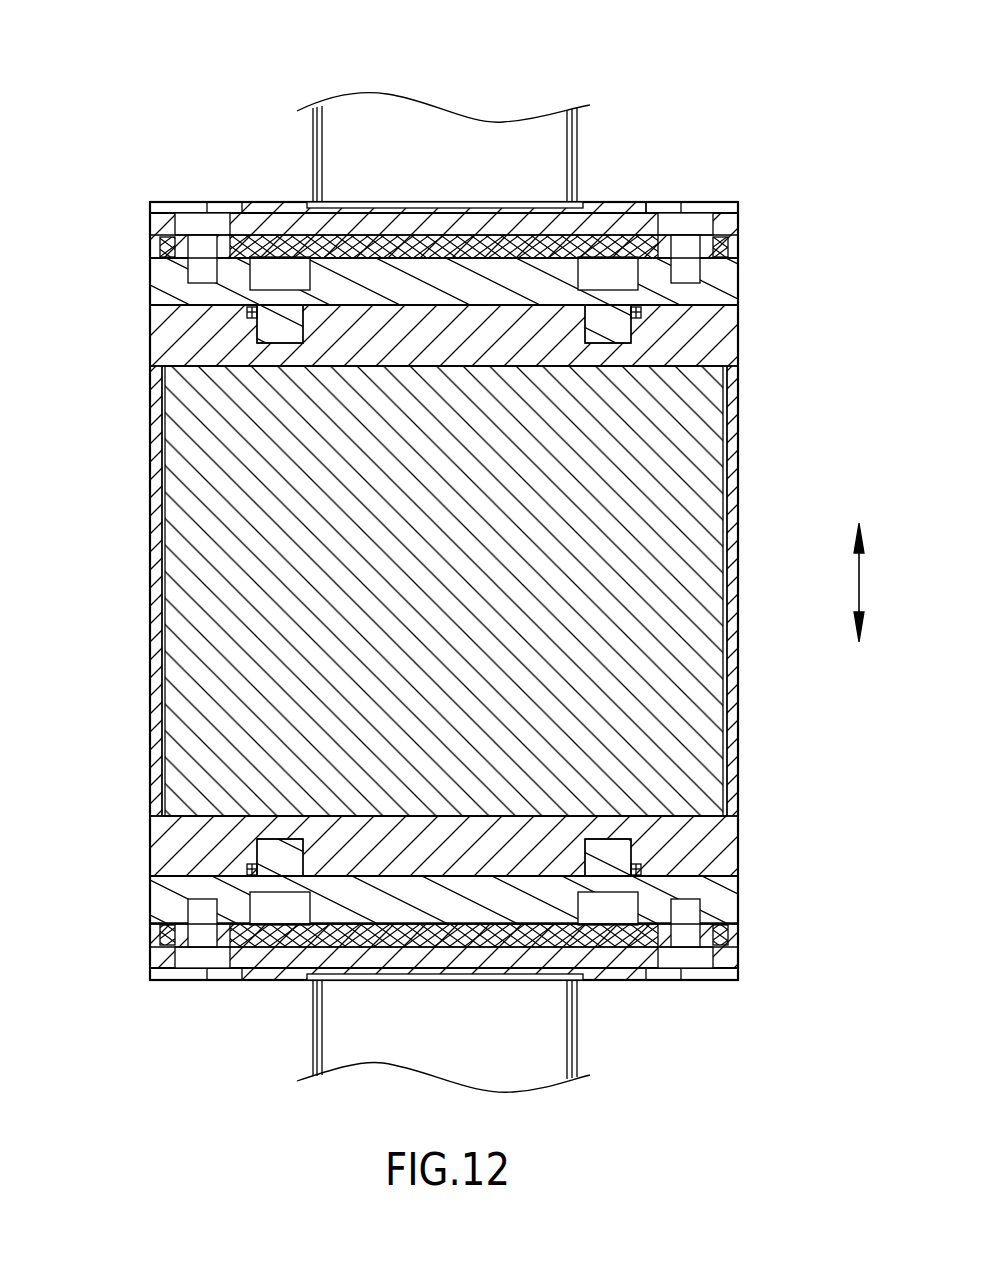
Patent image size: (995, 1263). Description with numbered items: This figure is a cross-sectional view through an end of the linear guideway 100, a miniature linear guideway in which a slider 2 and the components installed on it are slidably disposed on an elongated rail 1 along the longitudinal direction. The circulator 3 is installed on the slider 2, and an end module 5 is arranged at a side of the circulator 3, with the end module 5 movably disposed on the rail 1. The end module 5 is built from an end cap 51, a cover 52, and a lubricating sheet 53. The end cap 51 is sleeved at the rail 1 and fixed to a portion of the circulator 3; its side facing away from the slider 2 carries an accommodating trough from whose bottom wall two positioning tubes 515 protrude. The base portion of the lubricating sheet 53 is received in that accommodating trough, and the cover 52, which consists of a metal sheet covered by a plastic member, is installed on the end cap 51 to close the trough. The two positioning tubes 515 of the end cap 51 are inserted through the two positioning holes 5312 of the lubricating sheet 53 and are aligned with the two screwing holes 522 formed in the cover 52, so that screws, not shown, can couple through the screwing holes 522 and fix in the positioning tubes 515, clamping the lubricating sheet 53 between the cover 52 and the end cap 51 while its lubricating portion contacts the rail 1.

The linear guideway 100 is at (203, 48).
The rail 1 is at (590, 1031).
The slider 2 is at (690, 670).
The circulator 3 is at (752, 735).
The end module 5 is at (53, 200).
The end cap 51 is at (180, 289).
The cover 52 is at (167, 222).
The lubricating sheet 53 is at (160, 252).
The positioning tube 515 is at (703, 246).
The screwing hole 522 is at (700, 204).
The positioning hole 5312 is at (640, 236).